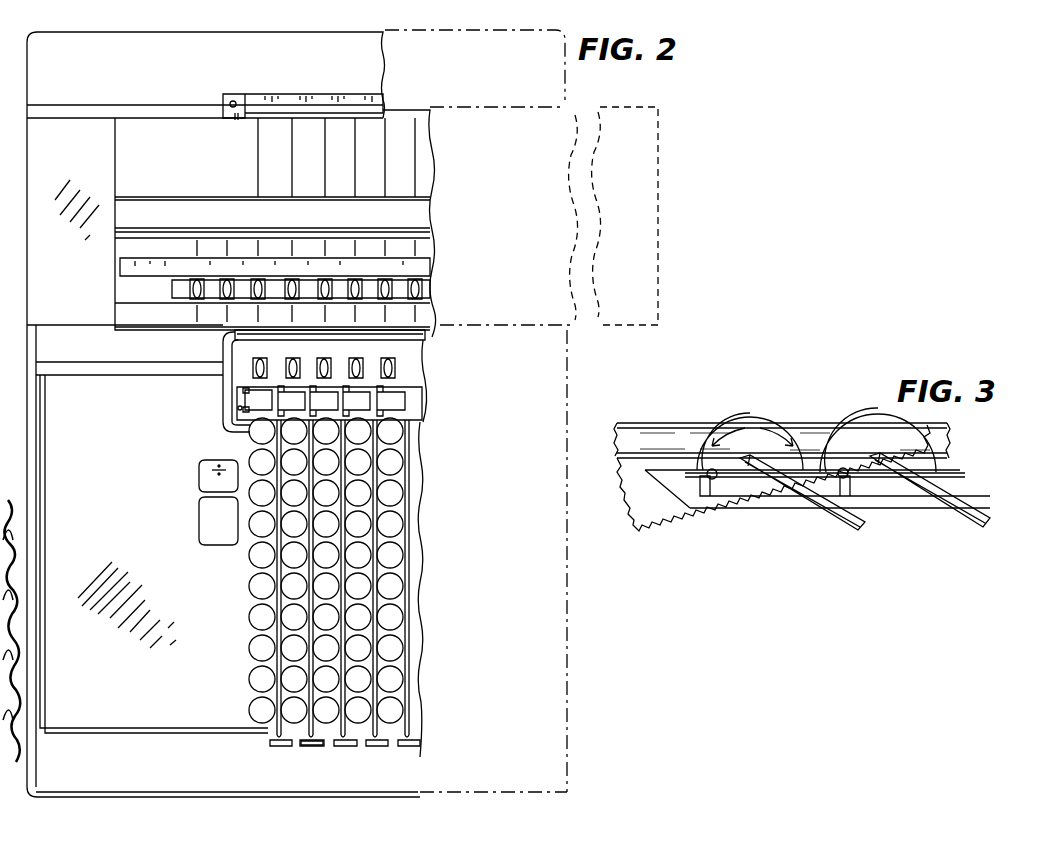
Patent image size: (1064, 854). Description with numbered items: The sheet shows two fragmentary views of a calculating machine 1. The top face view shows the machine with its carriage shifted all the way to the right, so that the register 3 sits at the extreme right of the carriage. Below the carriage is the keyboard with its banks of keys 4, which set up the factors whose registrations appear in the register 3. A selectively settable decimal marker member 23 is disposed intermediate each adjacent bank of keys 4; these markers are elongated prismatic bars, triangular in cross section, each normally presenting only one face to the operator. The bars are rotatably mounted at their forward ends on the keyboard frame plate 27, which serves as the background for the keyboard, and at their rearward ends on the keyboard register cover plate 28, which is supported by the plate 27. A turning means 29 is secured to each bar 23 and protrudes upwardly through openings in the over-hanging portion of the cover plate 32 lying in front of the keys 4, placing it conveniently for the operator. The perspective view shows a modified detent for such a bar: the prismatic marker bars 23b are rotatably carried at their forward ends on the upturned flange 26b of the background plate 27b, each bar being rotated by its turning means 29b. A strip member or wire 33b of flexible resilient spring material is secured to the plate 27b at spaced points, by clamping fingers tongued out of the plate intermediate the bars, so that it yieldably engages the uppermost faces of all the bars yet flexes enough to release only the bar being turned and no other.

In FIG. 2, the calculating machine 1 is at (121, 160).
In FIG. 2, the register 3 is at (170, 280).
In FIG. 2, the keys 4 is at (250, 649).
In FIG. 2, the decimal marker members 23 is at (272, 737).
In FIG. 2, the keyboard frame plate 27 is at (145, 644).
In FIG. 2, the keyboard register cover plate 28 is at (230, 348).
In FIG. 2, the turning means 29 is at (305, 746).
In FIG. 2, the cover plate 32 is at (168, 72).
In FIG. 3, the upturned flange 26b is at (782, 440).
In FIG. 3, the background plate 27b is at (692, 508).
In FIG. 3, the turning means 29b is at (853, 409).
In FIG. 3, the strip member or wire 33b is at (966, 475).
In FIG. 3, the prismatic marker bars 23b is at (978, 527).